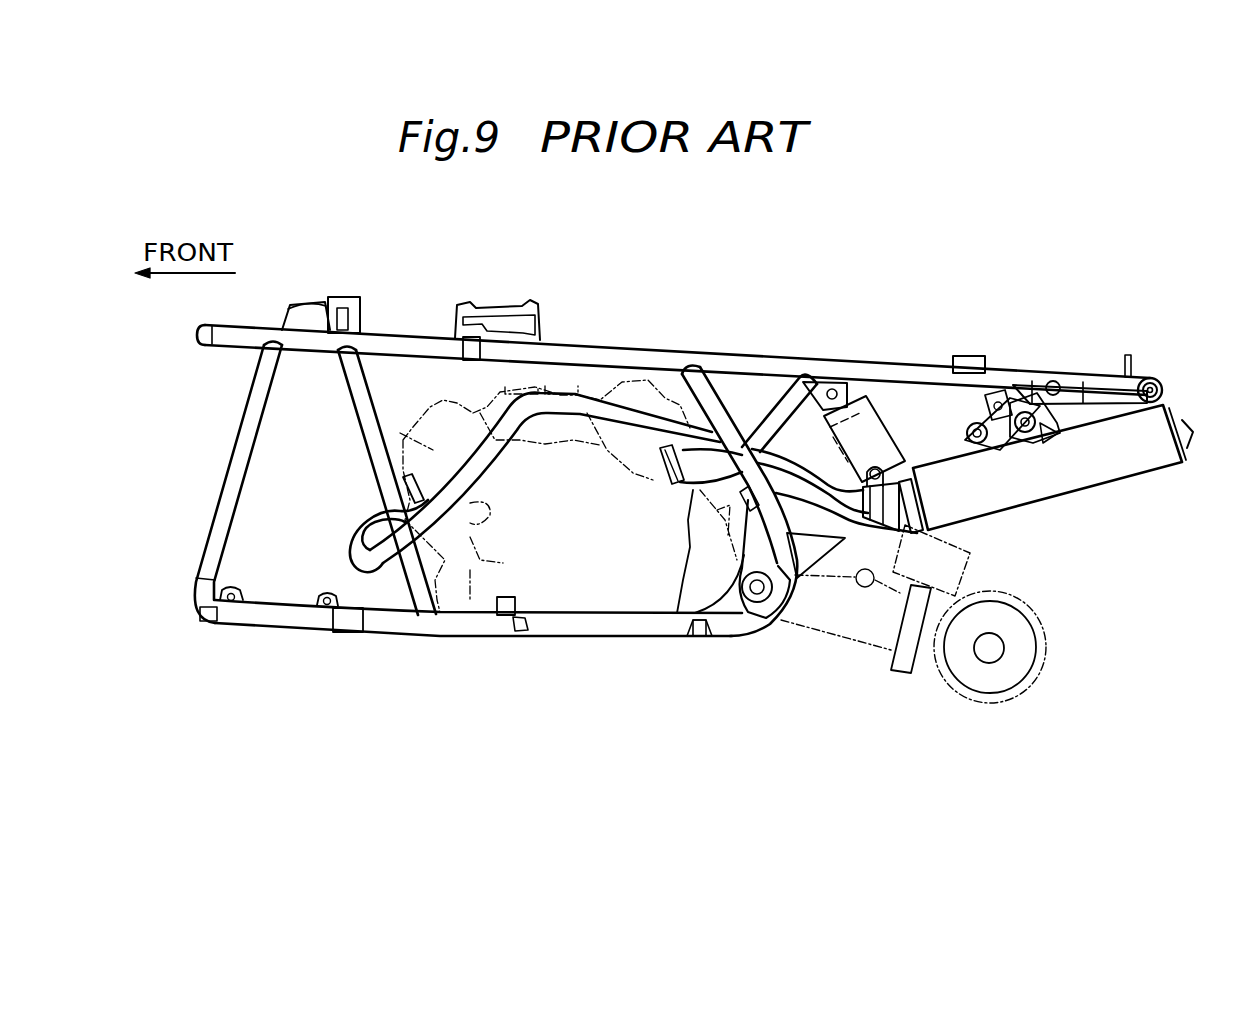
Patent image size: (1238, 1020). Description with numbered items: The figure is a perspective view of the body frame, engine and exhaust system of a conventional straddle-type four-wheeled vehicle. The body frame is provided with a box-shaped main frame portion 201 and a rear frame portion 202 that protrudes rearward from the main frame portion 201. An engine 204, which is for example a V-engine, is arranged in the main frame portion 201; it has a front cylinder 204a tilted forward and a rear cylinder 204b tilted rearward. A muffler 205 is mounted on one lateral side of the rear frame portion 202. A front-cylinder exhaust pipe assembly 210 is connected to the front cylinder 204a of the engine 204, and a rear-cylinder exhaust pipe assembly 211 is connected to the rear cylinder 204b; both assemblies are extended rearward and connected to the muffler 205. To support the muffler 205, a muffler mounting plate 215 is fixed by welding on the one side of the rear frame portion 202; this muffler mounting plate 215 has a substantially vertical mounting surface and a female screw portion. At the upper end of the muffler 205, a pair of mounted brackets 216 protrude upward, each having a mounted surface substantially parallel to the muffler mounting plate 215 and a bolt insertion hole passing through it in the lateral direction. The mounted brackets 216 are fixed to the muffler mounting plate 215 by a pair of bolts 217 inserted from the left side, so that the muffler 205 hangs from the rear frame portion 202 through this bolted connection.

The main frame portion 201 is at (420, 332).
The rear frame portion 202 is at (882, 358).
The engine 204 is at (575, 496).
The front cylinder 204a is at (435, 452).
The rear cylinder 204b is at (620, 380).
The muffler 205 is at (1147, 466).
The front-cylinder exhaust pipe assembly 210 is at (401, 614).
The rear-cylinder exhaust pipe assembly 211 is at (780, 490).
The muffler mounting plate 215 is at (1013, 395).
The mounted bracket 216 is at (1030, 440).
The bolt 217 is at (977, 443).